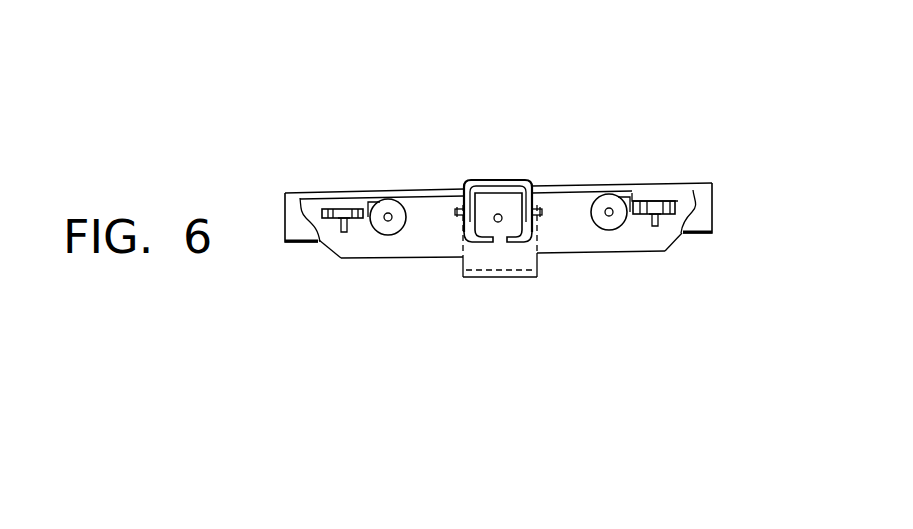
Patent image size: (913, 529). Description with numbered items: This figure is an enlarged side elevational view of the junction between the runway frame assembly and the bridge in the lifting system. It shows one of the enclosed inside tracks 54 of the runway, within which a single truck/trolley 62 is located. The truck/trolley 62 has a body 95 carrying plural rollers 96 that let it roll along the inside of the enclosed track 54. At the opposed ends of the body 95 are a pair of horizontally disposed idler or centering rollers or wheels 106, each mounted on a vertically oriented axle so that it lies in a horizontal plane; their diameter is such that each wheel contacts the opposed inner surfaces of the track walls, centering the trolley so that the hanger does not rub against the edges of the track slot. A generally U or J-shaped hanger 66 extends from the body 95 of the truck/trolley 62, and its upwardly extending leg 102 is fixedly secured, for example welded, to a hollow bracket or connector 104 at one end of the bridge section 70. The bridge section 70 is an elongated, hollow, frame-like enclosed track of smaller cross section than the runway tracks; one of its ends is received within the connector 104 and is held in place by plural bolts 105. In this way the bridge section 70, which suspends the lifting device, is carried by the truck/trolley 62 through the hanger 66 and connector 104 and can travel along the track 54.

The inside track 54 is at (707, 209).
The truck/trolley 62 is at (576, 210).
The hanger 66 is at (515, 278).
The bridge section 70 is at (509, 187).
The body 95 is at (640, 253).
The rollers 96 is at (388, 199).
The upwardly extending leg 102 is at (483, 260).
The bracket or connector 104 is at (488, 185).
The bolts 105 is at (457, 210).
The idler or centering rollers or wheels 106 is at (323, 210).